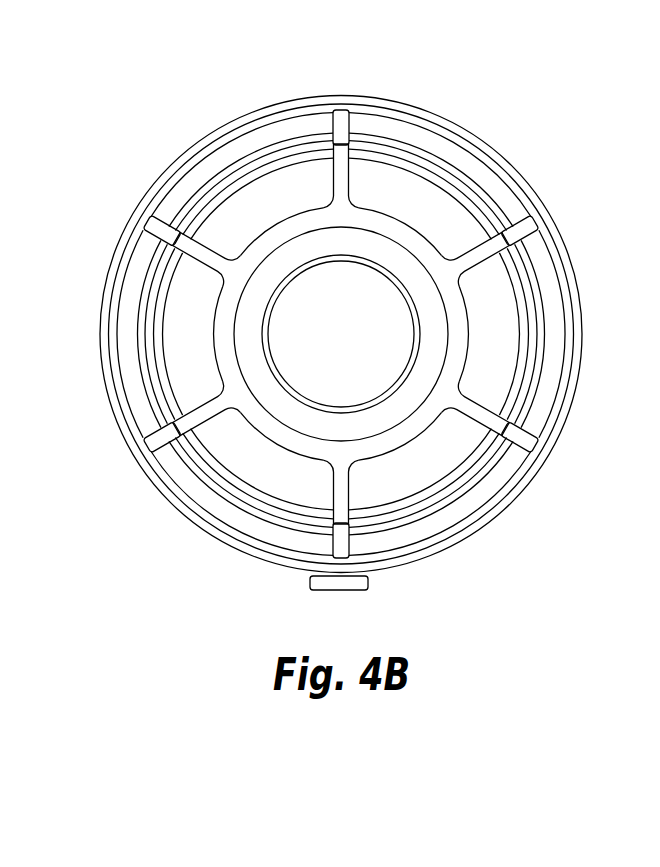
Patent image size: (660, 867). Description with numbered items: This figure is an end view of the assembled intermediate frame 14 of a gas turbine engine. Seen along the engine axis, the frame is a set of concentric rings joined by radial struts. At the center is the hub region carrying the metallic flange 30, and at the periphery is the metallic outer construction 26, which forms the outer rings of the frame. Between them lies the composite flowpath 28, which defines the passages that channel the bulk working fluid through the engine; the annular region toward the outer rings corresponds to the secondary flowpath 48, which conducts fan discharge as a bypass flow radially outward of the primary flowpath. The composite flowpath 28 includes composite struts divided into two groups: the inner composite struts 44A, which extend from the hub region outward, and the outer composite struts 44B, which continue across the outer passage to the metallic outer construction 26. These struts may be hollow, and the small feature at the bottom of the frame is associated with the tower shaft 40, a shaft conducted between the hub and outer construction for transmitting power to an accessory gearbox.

The intermediate frame 14 is at (562, 138).
The metallic outer construction 26 is at (493, 145).
The composite flowpath 28 is at (495, 373).
The metallic flange 30 is at (472, 318).
The tower shaft 40 is at (342, 592).
The inner composite struts 44A is at (208, 420).
The outer composite struts 44B is at (350, 122).
The secondary flowpath 48 is at (493, 182).